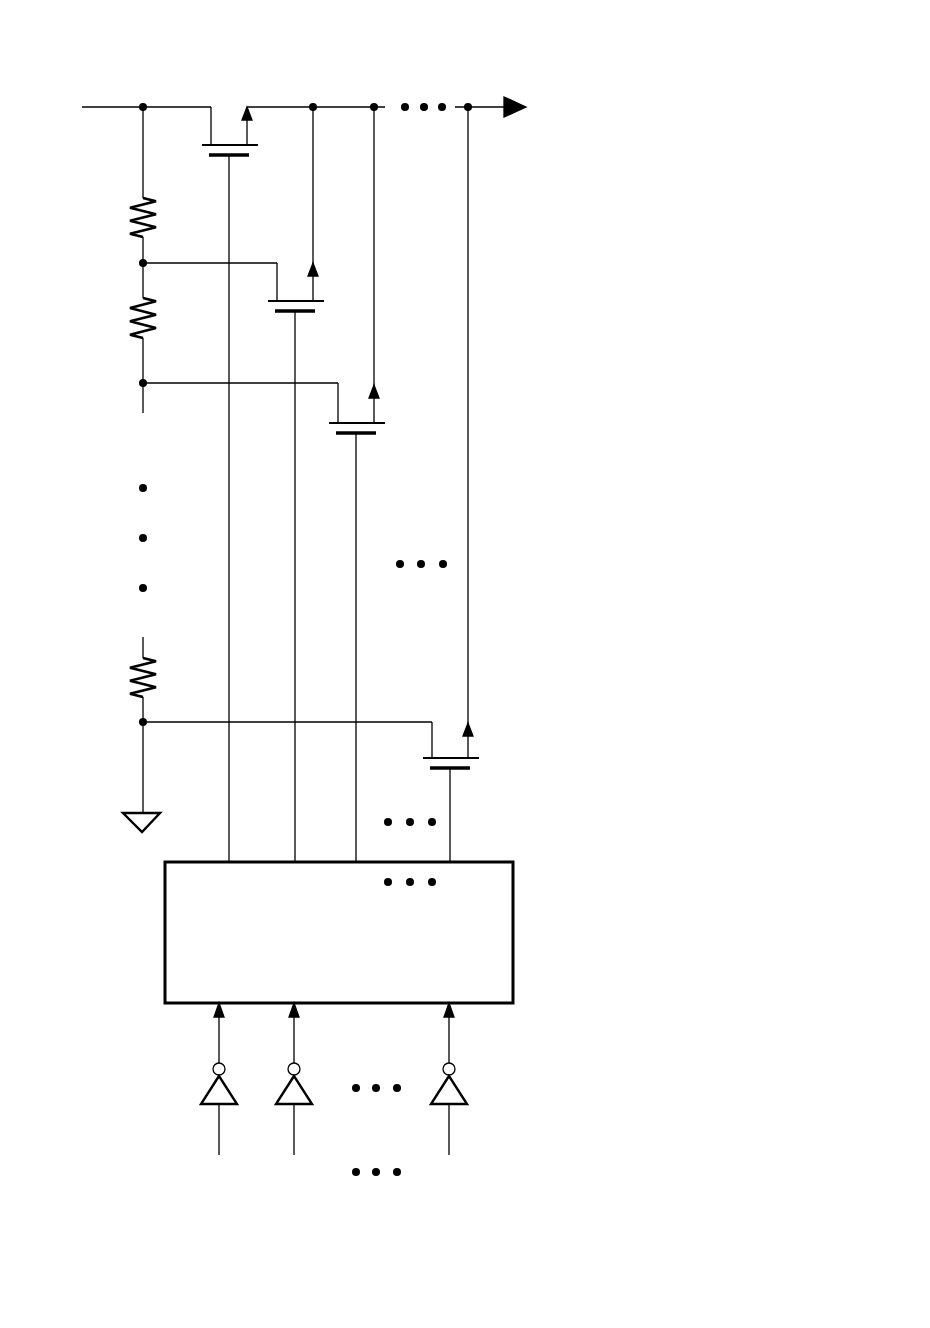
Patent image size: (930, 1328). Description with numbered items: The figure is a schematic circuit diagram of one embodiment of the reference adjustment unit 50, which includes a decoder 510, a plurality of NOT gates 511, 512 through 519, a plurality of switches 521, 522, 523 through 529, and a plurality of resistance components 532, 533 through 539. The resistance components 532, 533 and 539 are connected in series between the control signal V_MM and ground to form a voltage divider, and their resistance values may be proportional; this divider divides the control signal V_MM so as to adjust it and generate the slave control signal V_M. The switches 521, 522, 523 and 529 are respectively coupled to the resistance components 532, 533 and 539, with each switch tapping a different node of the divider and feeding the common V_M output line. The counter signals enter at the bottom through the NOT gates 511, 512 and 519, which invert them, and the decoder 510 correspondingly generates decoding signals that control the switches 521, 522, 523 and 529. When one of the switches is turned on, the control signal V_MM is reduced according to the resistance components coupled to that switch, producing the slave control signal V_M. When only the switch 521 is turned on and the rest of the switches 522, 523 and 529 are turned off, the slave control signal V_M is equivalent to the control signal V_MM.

The reference adjustment unit 50 is at (632, 35).
The decoder 510 is at (350, 917).
The NOT gate 511 is at (198, 1079).
The NOT gate 512 is at (275, 1079).
The NOT gate 519 is at (428, 1079).
The switch 521 is at (211, 107).
The switch 522 is at (277, 263).
The switch 523 is at (338, 383).
The switch 529 is at (432, 722).
The resistance component 532 is at (119, 218).
The resistance component 533 is at (119, 318).
The resistance component 539 is at (119, 678).